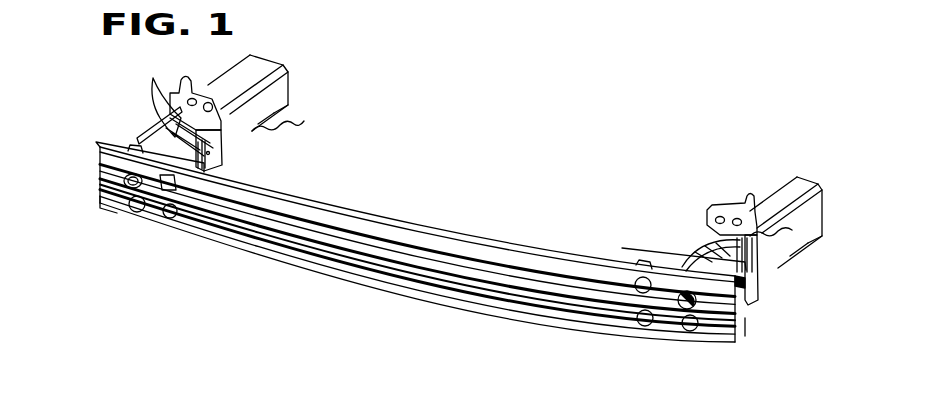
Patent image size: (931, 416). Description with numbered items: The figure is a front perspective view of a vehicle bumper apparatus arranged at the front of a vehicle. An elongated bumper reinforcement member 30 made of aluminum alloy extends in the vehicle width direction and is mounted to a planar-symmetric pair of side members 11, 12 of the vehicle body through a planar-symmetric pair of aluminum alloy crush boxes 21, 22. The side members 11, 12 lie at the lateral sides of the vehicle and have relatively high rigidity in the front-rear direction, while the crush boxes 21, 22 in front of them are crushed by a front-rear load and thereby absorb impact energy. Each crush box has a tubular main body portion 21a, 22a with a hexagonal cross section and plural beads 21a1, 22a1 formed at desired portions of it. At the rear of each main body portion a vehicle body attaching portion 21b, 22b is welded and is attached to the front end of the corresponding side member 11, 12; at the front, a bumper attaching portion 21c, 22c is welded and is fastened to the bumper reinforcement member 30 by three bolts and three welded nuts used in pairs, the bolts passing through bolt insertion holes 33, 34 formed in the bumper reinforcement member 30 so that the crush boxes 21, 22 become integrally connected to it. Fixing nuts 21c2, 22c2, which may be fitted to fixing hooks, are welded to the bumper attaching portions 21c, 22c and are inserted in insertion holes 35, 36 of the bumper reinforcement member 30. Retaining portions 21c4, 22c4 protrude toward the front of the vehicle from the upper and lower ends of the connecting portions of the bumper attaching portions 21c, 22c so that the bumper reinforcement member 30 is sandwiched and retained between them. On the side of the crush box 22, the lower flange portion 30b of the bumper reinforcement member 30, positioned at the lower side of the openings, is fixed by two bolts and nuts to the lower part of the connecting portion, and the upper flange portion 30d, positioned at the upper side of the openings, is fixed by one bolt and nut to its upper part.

The bumper reinforcement member 30 is at (419, 222).
The side member 11 is at (278, 113).
The side member 12 is at (781, 194).
The crush box 21 is at (150, 122).
The main body portion 21a is at (210, 154).
The bead 21a1 is at (154, 96).
The vehicle body attaching portion 21b is at (213, 129).
The bumper attaching portion 21c is at (130, 141).
The fixing nut 21c2 is at (111, 190).
The retaining portion 21c4 is at (134, 148).
The bolt insertion hole 33 is at (166, 215).
The insertion hole 35 is at (114, 176).
The crush box 22 is at (703, 253).
The main body portion 22a is at (692, 263).
The bead 22a1 is at (745, 262).
The vehicle body attaching portion 22b is at (708, 222).
The bumper attaching portion 22c is at (641, 248).
The fixing nut 22c2 is at (689, 309).
The retaining portion 22c4 is at (643, 268).
The bolt insertion hole 34 is at (650, 320).
The insertion hole 36 is at (741, 303).
The lower flange portion 30b is at (743, 323).
The upper flange portion 30d is at (742, 286).